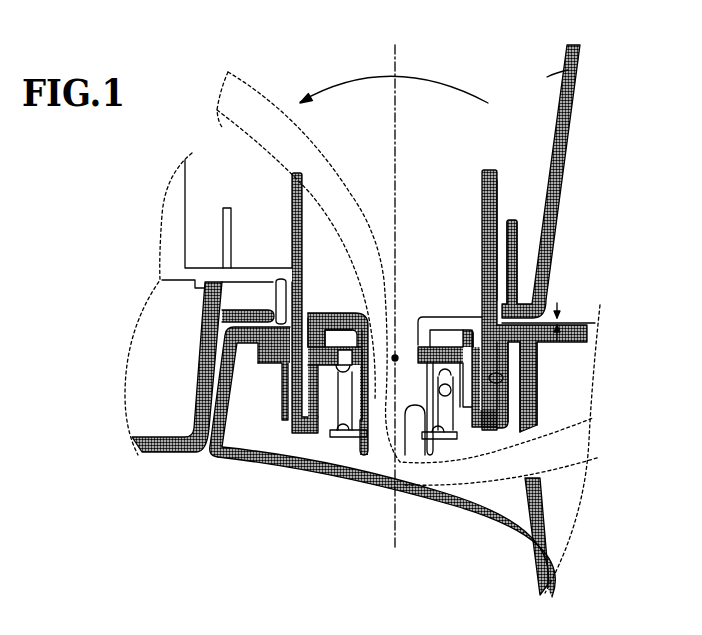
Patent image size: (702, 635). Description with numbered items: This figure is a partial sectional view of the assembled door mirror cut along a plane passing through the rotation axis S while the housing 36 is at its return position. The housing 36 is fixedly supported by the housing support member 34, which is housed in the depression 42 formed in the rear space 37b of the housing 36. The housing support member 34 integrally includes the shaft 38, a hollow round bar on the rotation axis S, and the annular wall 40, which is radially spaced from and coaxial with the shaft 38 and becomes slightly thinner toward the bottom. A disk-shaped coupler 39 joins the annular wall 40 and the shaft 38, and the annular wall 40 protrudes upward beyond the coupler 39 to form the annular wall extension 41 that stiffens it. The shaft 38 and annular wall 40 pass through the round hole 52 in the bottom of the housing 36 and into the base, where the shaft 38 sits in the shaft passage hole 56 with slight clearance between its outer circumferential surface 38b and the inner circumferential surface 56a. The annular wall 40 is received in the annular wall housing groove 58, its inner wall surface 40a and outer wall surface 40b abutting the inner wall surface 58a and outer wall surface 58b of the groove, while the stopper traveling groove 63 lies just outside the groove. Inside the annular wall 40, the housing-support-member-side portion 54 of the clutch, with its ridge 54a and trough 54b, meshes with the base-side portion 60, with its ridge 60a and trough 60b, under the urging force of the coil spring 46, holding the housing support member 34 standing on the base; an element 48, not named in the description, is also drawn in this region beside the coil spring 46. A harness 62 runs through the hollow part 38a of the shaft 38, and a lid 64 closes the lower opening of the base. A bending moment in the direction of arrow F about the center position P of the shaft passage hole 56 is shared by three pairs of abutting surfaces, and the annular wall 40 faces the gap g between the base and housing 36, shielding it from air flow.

The housing support member 34 is at (500, 195).
The housing 36 is at (160, 452).
The rear space 37b is at (568, 70).
The shaft 38 is at (433, 440).
The hollow part 38a is at (403, 445).
The outer circumferential surface 38b is at (352, 310).
The coupler 39 is at (443, 318).
The annular wall 40 is at (486, 363).
The inner wall surface 40a is at (466, 440).
The outer wall surface 40b is at (500, 353).
The annular wall extension 41 is at (491, 212).
The depression 42 is at (505, 235).
The coil spring 46 is at (463, 440).
The pin 48 is at (345, 437).
The round hole 52 is at (283, 285).
The housing-support-member-side portion of the clutch 54 is at (328, 338).
The ridge 54a is at (315, 342).
The trough 54b is at (473, 335).
The shaft passage hole 56 is at (424, 355).
The inner circumferential surface 56a is at (393, 352).
The annular wall housing groove 58 is at (490, 415).
The inner wall surface 58a is at (475, 398).
The outer wall surface 58b is at (476, 393).
The base-side portion of the clutch 60 is at (327, 356).
The ridge 60a is at (468, 337).
The trough 60b is at (325, 366).
The harness 62 is at (312, 140).
The stopper traveling groove 63 is at (283, 370).
The lid 64 is at (252, 463).
The center position P is at (396, 245).
The rotation axis S is at (397, 56).
The arrow F is at (448, 80).
The gap g is at (548, 318).